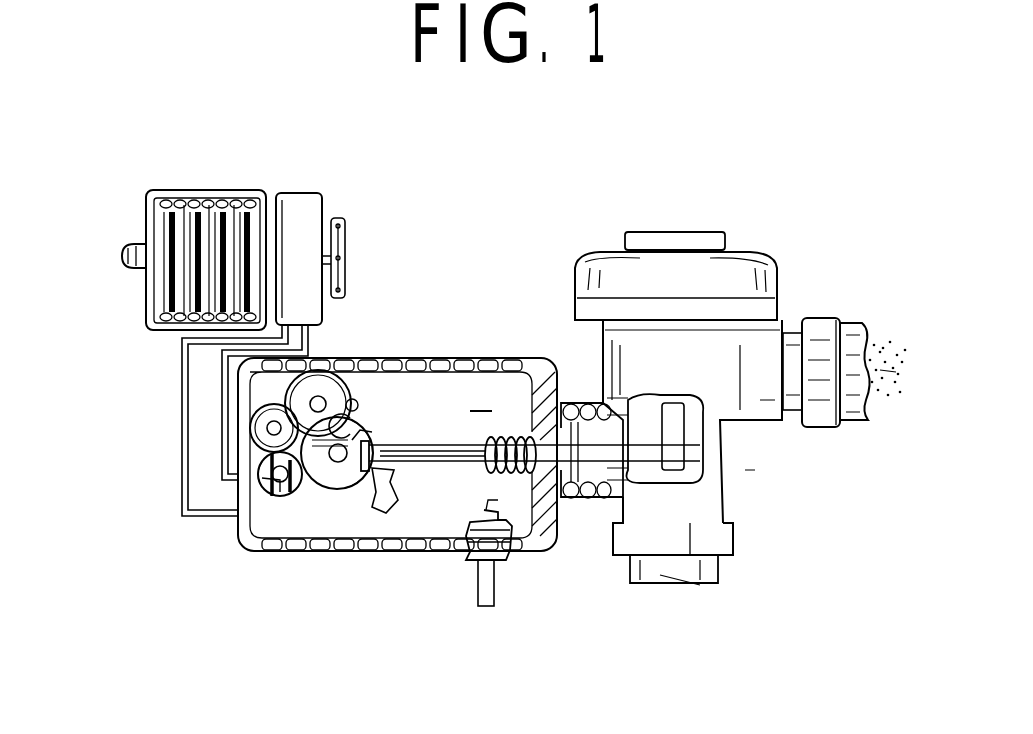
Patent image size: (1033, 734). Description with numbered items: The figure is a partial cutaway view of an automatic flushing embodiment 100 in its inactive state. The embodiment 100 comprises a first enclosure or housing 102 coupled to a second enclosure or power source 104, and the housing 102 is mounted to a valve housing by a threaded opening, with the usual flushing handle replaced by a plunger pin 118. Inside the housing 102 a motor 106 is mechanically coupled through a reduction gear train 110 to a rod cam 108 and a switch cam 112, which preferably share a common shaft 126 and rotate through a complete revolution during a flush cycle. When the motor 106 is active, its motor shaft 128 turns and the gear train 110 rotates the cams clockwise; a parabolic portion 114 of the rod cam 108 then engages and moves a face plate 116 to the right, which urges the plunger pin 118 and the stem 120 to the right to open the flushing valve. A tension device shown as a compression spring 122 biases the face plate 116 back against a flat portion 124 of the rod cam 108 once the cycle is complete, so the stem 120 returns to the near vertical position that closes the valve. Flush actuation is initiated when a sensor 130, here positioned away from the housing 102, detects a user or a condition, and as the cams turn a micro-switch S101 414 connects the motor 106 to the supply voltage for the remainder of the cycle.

The automatic flushing embodiment 100 is at (525, 240).
The housing 102 is at (270, 557).
The power source 104 is at (168, 340).
The motor 106 is at (216, 496).
The rod cam 108 is at (326, 470).
The gear train 110 is at (305, 386).
The switch cam 112 is at (482, 510).
The parabolic portion 114 is at (353, 398).
The face plate 116 is at (372, 441).
The plunger pin 118 is at (588, 425).
The stem 120 is at (688, 452).
The compression spring 122 is at (512, 478).
The flat portion 124 is at (372, 418).
The common shaft 126 is at (354, 426).
The motor shaft 128 is at (262, 494).
The sensor 130 is at (346, 222).
The switch S101 414 is at (380, 505).